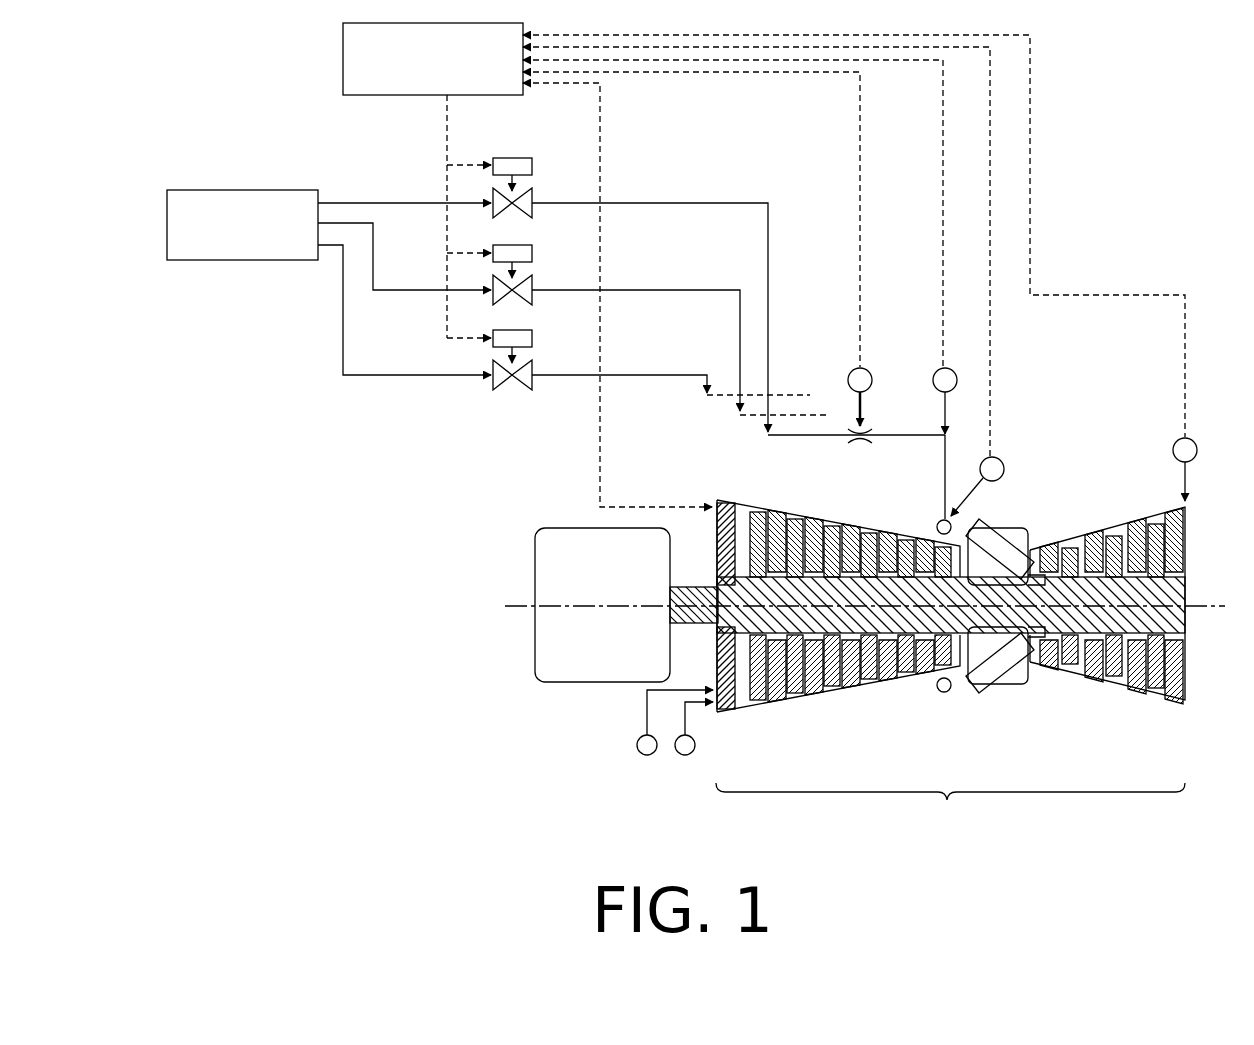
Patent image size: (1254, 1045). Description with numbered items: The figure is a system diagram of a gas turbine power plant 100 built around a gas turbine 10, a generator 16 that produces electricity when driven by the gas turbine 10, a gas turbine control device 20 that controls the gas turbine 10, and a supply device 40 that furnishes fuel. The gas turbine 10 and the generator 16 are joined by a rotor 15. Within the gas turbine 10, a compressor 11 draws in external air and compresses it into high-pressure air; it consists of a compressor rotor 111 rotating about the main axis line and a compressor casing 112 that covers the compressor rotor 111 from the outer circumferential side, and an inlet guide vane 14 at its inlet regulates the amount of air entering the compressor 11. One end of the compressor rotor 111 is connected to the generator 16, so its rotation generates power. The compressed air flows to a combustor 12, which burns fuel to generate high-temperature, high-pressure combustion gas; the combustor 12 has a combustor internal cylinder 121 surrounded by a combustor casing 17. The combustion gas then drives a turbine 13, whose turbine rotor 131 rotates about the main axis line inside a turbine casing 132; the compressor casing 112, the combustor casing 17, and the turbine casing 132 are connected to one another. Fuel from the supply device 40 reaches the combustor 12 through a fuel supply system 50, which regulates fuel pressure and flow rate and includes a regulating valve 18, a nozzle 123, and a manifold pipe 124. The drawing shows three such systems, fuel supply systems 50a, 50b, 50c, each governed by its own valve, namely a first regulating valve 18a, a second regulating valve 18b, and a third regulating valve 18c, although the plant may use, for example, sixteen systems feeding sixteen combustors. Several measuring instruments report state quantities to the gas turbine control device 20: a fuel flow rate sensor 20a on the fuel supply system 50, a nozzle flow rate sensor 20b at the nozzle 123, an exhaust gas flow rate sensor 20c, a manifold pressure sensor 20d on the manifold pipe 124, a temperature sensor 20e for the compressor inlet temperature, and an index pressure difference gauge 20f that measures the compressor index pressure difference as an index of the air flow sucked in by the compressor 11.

The gas turbine power plant 100 is at (1113, 80).
The gas turbine 10 is at (950, 806).
The compressor 11 is at (862, 710).
The compressor rotor 111 is at (838, 640).
The compressor casing 112 is at (760, 505).
The combustor 12 is at (1006, 710).
The combustor internal cylinder 121 is at (1025, 684).
The nozzle 123 is at (858, 447).
The manifold pipe 124 is at (939, 519).
The turbine 13 is at (1128, 710).
The turbine rotor 131 is at (1097, 690).
The turbine casing 132 is at (1163, 511).
The inlet guide vane 14 is at (746, 503).
The rotor 15 is at (694, 576).
The generator 16 is at (607, 683).
The combustor casing 17 is at (993, 688).
The regulating valve 18 is at (519, 141).
The first regulating valve 18a is at (521, 158).
The second regulating valve 18b is at (521, 245).
The third regulating valve 18c is at (521, 331).
The gas turbine control device 20 is at (343, 60).
The fuel flow rate sensor 20a is at (850, 372).
The nozzle flow rate sensor 20b is at (935, 372).
The exhaust gas flow rate sensor 20c is at (1176, 442).
The manifold pressure sensor 20d is at (1000, 457).
The temperature sensor 20e is at (686, 756).
The index pressure difference gauge 20f is at (647, 756).
The supply device 40 is at (167, 226).
The fuel supply system 50 is at (679, 150).
The fuel supply system 50a is at (403, 203).
The fuel supply system 50b is at (403, 290).
The fuel supply system 50c is at (403, 375).